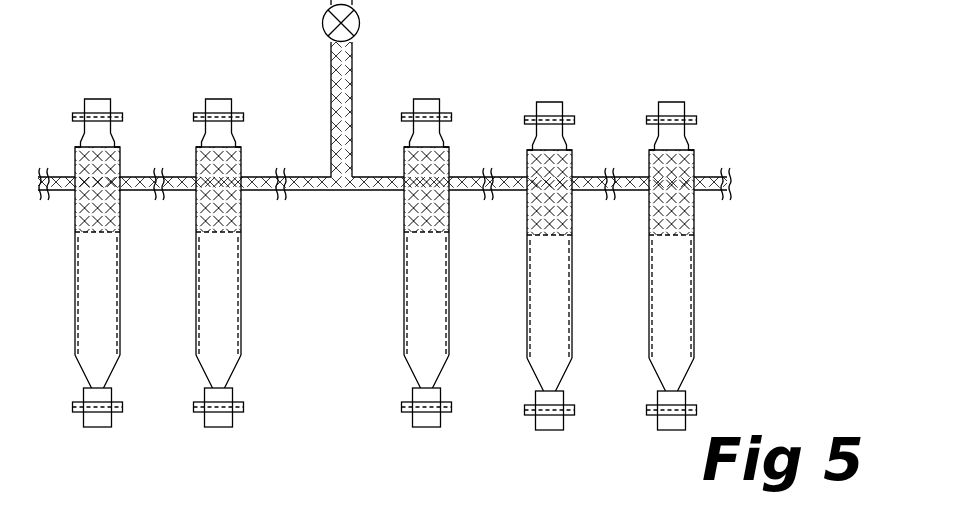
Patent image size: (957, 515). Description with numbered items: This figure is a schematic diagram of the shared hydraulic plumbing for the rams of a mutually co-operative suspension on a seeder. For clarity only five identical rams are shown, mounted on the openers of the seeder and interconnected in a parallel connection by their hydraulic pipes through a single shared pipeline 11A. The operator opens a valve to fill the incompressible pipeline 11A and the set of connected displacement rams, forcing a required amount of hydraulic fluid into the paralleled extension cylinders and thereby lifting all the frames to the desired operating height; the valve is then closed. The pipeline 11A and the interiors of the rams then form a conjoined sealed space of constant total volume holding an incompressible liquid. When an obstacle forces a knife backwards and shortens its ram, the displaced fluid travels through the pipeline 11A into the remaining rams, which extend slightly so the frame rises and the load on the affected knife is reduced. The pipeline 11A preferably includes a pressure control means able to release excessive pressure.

The shared pipeline 11A is at (329, 102).